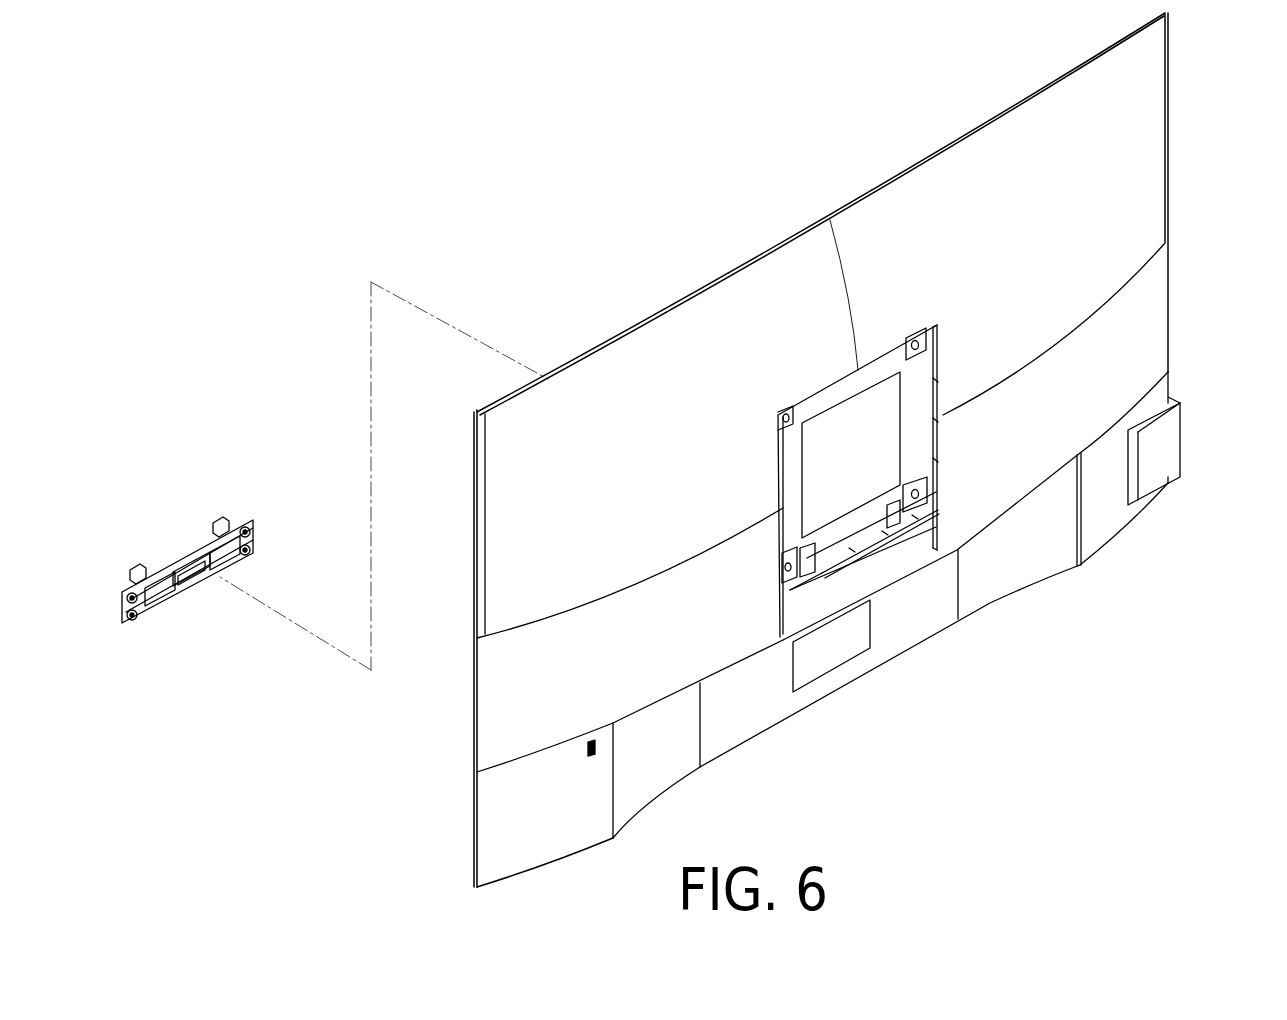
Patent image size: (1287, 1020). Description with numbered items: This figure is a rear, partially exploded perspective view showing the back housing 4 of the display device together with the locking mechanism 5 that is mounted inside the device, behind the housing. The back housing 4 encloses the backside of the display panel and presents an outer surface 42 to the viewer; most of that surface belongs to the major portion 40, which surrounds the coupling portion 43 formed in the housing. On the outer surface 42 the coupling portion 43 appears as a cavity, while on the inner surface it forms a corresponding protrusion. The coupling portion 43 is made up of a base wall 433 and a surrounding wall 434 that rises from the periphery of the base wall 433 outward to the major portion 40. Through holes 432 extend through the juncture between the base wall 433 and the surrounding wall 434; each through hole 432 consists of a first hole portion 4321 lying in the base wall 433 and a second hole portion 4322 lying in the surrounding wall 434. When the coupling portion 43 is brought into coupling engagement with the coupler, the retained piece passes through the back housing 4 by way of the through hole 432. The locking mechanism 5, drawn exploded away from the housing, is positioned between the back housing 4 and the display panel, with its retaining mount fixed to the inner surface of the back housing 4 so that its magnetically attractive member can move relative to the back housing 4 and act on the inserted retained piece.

The back housing 4 is at (1170, 97).
The major portion 40 is at (815, 358).
The outer surface 42 is at (1077, 226).
The coupling portion 43 is at (872, 375).
The through hole 432 is at (982, 638).
The first hole portion 4321 is at (809, 556).
The second hole portion 4322 is at (806, 562).
The base wall 433 is at (913, 392).
The surrounding wall 434 is at (937, 505).
The locking mechanism 5 is at (233, 520).